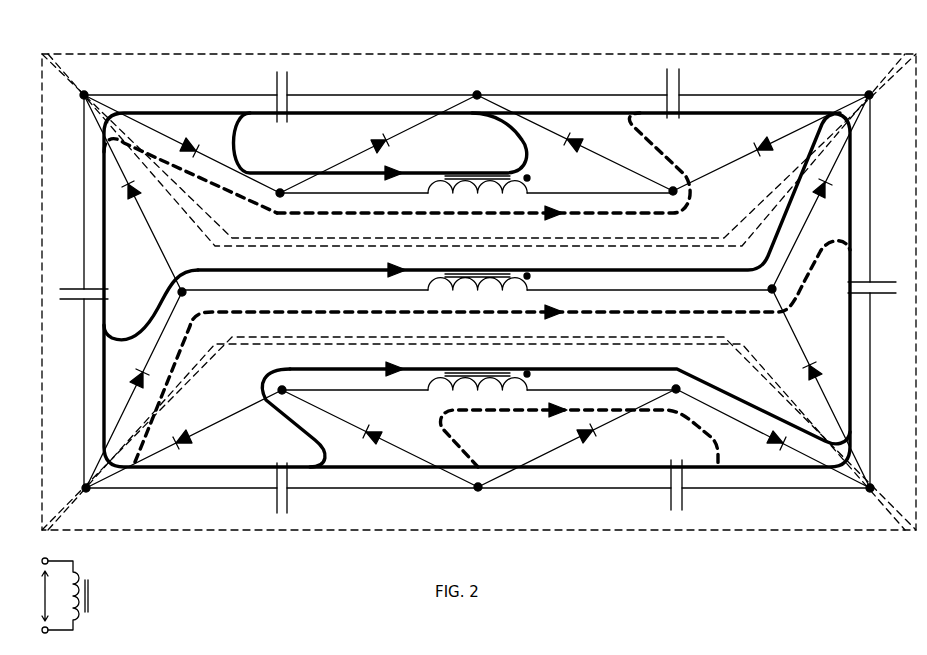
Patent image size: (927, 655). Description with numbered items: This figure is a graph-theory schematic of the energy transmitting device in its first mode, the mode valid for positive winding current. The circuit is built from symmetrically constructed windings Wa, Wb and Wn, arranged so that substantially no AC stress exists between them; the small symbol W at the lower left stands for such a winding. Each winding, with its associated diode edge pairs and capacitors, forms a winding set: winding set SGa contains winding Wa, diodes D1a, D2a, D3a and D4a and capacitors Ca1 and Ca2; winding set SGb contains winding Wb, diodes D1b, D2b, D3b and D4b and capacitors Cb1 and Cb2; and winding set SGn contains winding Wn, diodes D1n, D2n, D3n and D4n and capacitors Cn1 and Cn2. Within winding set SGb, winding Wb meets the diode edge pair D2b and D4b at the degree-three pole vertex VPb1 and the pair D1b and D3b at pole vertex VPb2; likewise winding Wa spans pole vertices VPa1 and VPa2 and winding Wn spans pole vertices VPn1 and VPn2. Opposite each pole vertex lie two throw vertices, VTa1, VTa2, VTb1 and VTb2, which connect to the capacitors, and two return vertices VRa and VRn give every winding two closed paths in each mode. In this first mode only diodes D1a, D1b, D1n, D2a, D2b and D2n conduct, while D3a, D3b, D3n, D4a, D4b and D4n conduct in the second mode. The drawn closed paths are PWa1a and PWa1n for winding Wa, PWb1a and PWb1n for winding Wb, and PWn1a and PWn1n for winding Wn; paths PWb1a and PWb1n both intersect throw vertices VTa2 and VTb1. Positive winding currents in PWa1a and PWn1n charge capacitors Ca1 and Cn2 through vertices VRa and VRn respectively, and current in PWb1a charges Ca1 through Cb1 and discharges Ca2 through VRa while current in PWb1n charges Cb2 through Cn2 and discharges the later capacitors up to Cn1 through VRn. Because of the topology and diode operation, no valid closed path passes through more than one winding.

The winding set SGn is at (454, 54).
The winding set SGb is at (42, 324).
The winding set SGa is at (472, 530).
The capacitor Cn2 is at (288, 82).
The capacitor Cn1 is at (666, 82).
The capacitor Cb2 is at (80, 284).
The capacitor Cb1 is at (870, 296).
The capacitor Ca2 is at (288, 500).
The capacitor Ca1 is at (670, 496).
The return vertex VRn is at (476, 91).
The return vertex VRa is at (478, 491).
The throw vertex VTb2 is at (66, 103).
The throw vertex VTb1 is at (871, 98).
The throw vertex VTa2 is at (82, 490).
The throw vertex VTa1 is at (874, 491).
The pole vertex VPn2 is at (281, 198).
The pole vertex VPn1 is at (674, 196).
The pole vertex VPb2 is at (185, 288).
The pole vertex VPb1 is at (768, 285).
The pole vertex VPa2 is at (280, 386).
The pole vertex VPa1 is at (676, 385).
The winding Wn is at (447, 175).
The winding Wb is at (446, 276).
The winding Wa is at (446, 372).
The closed path PWn1n is at (282, 168).
The closed path PWn1a is at (626, 128).
The closed path PWb1n is at (150, 300).
The closed path PWb1a is at (804, 280).
The closed path PWa1n is at (310, 462).
The closed path PWa1a is at (712, 452).
The diode D1n is at (193, 145).
The diode D3n is at (383, 150).
The diode D2n is at (570, 148).
The diode D4n is at (756, 146).
The diode D3b is at (130, 198).
The diode D2b is at (826, 197).
The diode D1b is at (138, 372).
The diode D4b is at (822, 374).
The diode D3a is at (192, 443).
The diode D1a is at (372, 426).
The diode D4a is at (576, 430).
The diode D2a is at (768, 440).
The transformer winding symbol W is at (63, 595).